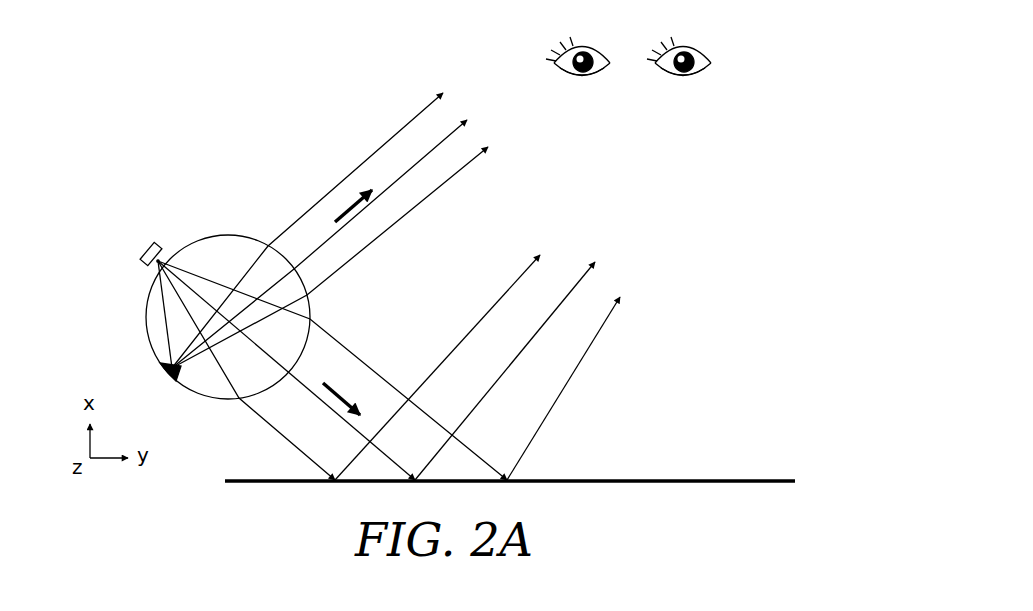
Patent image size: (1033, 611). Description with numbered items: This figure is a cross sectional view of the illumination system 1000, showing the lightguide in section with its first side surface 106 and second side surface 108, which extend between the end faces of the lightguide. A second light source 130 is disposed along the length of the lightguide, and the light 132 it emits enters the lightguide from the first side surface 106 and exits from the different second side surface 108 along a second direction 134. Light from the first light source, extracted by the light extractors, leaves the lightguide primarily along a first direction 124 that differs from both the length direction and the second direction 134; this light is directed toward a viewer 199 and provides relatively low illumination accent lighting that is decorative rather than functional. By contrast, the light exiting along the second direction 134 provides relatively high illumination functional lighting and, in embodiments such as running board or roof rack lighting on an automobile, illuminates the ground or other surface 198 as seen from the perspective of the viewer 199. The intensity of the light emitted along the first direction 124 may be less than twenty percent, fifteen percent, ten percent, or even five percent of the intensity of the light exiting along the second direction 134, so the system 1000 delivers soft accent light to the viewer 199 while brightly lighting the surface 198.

The display system 1000 is at (158, 118).
The first side surface 106 is at (203, 236).
The second side surface 108 is at (265, 395).
The first direction 124 is at (347, 208).
The second light source 130 is at (146, 246).
The light 132 is at (156, 268).
The second direction 134 is at (340, 390).
The ground or other surface 198 is at (673, 479).
The viewer 199 is at (703, 73).